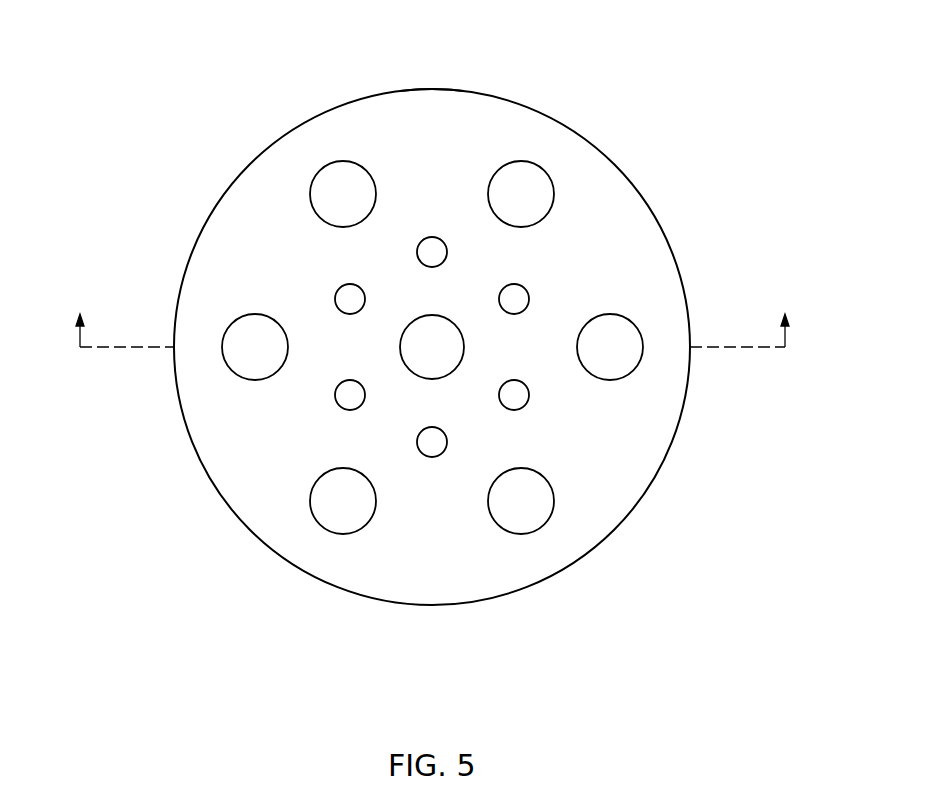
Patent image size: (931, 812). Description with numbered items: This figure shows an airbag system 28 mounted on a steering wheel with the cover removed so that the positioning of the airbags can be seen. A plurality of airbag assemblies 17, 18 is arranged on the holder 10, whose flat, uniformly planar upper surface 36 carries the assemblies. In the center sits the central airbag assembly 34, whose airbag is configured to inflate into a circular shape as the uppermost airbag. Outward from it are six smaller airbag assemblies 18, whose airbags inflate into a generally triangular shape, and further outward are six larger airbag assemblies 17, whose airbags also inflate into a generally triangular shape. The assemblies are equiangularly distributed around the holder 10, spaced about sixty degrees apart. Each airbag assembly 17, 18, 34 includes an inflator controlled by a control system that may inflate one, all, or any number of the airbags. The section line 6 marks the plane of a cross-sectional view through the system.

The holder 10 is at (470, 570).
The airbag assemblies 17 is at (339, 161).
The airbag assemblies 18 is at (432, 237).
The airbag system 28 is at (433, 89).
The central airbag assembly 34 is at (410, 323).
The upper surface 36 is at (562, 254).
The section line 6- 6 is at (433, 320).